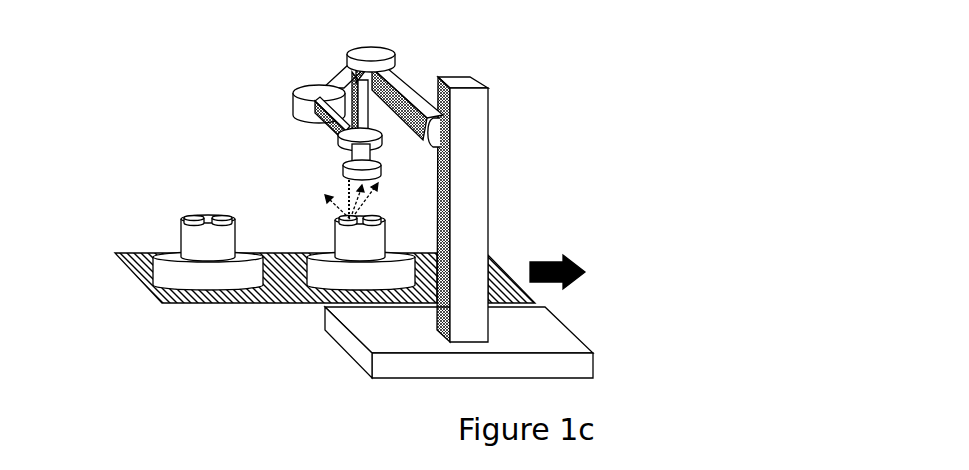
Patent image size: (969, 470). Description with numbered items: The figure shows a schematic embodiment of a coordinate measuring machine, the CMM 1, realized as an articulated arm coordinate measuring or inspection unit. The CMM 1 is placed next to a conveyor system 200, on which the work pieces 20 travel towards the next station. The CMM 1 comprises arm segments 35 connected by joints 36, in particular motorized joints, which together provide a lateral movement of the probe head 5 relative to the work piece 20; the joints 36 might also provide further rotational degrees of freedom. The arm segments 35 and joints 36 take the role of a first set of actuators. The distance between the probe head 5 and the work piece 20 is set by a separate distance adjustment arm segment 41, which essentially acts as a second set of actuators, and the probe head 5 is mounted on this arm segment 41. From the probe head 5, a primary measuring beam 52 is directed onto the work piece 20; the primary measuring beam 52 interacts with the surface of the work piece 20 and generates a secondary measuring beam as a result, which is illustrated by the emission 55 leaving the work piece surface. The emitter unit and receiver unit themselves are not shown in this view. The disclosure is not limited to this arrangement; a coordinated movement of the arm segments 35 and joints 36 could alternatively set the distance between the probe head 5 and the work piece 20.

The CMM 1 is at (459, 342).
The probe head 5 is at (339, 162).
The work piece 20 is at (334, 239).
The arm segment 35 is at (403, 86).
The joint 36 is at (319, 69).
The distance adjustment arm segment 41 is at (305, 136).
The primary measuring beam 52 is at (272, 187).
The emission / plasma 55 is at (284, 201).
The conveyor system 200 is at (304, 261).